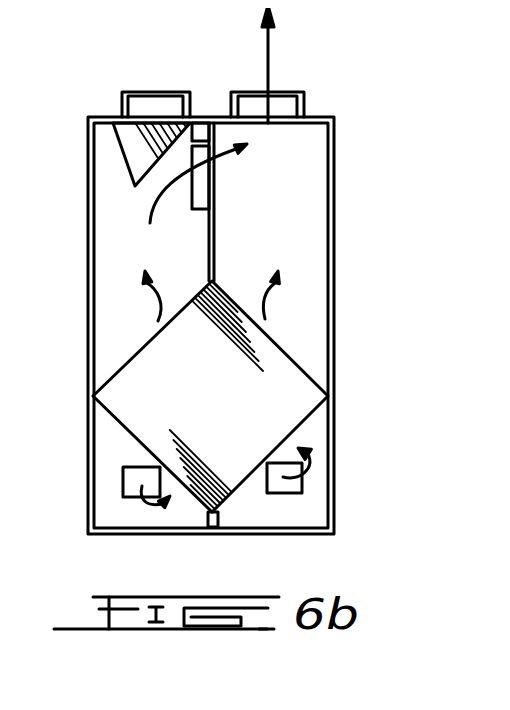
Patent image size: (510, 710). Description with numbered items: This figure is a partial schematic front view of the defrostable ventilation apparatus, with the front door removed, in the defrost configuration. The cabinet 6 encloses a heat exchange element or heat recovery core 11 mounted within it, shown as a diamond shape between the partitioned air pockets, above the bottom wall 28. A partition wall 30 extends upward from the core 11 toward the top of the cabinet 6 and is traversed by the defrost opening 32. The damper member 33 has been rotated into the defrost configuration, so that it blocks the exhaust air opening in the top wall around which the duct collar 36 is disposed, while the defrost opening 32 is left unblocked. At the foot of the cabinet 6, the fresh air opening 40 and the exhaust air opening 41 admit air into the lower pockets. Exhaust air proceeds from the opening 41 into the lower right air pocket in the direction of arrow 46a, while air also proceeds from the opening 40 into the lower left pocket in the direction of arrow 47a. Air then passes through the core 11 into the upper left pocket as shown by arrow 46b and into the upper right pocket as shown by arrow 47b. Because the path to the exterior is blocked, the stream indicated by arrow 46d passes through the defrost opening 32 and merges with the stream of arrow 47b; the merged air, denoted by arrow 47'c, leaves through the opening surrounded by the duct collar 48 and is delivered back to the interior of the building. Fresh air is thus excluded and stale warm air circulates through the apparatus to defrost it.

The cabinet 6 is at (93, 414).
The heat exchange element or heat recovery core 11 is at (288, 385).
The bottom wall 28 is at (220, 527).
The partition wall 30 is at (215, 243).
The defrost opening 32 is at (209, 189).
The damper member 33 is at (132, 153).
The duct collar 36 is at (119, 102).
The fresh air opening 40 is at (124, 492).
The exhaust air opening 41 is at (290, 494).
The arrow 46a is at (317, 464).
The arrow 46b is at (142, 305).
The arrow 46d is at (158, 196).
The arrow 47a is at (148, 520).
The arrow 47b is at (280, 301).
The arrow 47'c is at (310, 65).
The duct collar 48 is at (309, 102).